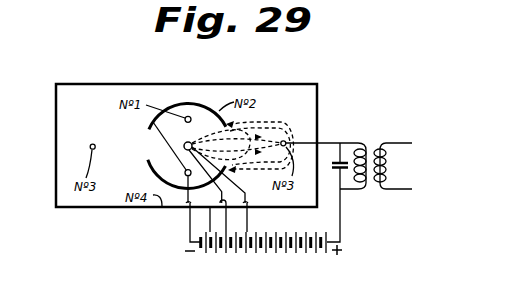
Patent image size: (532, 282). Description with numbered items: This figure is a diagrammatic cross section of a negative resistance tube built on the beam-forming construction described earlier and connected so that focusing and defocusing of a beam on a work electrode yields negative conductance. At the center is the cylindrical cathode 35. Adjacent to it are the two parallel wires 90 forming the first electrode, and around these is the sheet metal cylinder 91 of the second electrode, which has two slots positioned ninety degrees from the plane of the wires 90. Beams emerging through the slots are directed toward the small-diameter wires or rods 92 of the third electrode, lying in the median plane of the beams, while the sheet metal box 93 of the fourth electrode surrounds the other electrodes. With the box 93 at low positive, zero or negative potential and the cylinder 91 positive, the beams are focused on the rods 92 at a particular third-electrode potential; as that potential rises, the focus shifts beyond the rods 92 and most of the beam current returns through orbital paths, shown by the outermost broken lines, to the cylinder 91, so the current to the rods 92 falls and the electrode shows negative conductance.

The sheet metal box 93 is at (56, 102).
The wires 92 is at (91, 149).
The parallel wires 90 is at (195, 103).
The cylinder 91 is at (169, 108).
The cylindrical cathode 35 is at (184, 146).